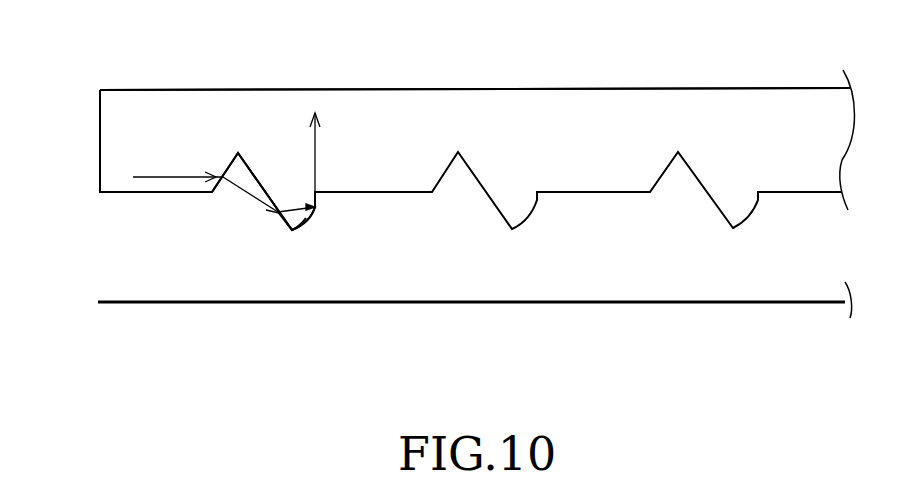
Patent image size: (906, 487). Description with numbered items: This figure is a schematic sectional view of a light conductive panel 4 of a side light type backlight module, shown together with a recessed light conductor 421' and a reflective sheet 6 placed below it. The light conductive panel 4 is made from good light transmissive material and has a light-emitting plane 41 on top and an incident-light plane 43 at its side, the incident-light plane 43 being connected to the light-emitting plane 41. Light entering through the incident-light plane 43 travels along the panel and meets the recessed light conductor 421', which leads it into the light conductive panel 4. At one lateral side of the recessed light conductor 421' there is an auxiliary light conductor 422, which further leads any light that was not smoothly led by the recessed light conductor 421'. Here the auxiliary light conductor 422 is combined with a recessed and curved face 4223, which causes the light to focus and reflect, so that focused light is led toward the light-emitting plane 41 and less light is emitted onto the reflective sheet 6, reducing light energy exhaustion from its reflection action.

The light conductive panel 4 is at (812, 63).
The light-emitting plane 41 is at (700, 88).
The incident-light plane 43 is at (100, 127).
The recessed light conductor 421' is at (220, 201).
The auxiliary light conductor 422 is at (313, 226).
The recessed and curved face 4223 is at (317, 205).
The reflective sheet 6 is at (752, 302).